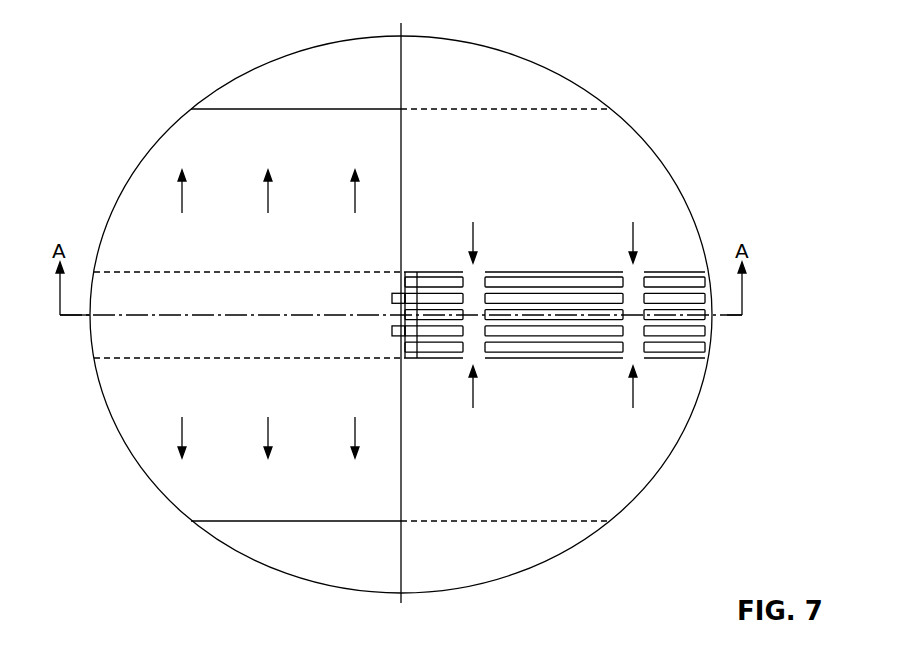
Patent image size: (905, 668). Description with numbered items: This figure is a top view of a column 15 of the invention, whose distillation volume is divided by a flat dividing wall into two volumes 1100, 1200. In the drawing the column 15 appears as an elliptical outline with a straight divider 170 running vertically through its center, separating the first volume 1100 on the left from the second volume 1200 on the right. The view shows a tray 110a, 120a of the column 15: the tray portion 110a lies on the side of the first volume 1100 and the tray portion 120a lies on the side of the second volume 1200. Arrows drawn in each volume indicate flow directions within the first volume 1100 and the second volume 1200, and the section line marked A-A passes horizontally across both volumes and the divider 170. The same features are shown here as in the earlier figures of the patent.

The column 15 is at (108, 64).
The central divider 170 is at (410, 149).
The first volume 1100 is at (142, 216).
The second volume 1200 is at (622, 154).
The tray 110a is at (180, 494).
The tray 120a is at (645, 448).